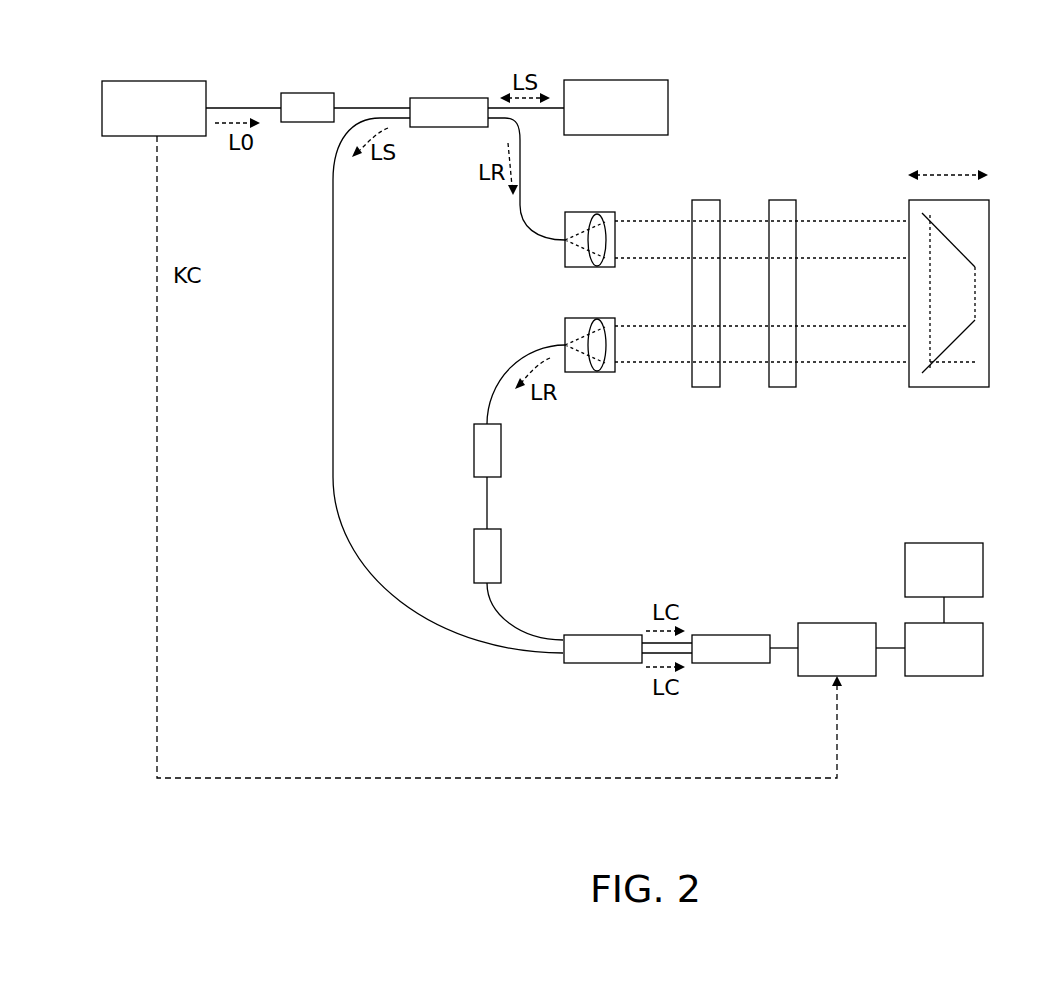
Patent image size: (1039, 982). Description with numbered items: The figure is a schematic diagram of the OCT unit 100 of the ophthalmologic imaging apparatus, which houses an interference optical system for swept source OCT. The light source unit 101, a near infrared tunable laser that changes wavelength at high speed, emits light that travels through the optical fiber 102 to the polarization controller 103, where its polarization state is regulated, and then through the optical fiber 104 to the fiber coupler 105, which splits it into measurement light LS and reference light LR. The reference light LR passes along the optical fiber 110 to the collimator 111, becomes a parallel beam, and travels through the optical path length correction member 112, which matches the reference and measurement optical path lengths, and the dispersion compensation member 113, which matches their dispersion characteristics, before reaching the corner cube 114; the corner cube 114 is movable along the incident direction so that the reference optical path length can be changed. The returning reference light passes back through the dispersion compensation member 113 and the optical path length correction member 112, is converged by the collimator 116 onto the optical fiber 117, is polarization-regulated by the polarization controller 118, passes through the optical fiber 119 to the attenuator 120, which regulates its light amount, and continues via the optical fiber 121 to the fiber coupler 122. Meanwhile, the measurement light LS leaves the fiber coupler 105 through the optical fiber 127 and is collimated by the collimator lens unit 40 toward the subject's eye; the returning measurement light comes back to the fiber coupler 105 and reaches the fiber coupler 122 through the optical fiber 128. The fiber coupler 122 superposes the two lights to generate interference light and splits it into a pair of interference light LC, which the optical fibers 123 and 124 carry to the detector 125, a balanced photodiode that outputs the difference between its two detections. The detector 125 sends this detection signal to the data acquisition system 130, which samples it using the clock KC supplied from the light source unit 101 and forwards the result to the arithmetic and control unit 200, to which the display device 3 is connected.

The OCT unit 100 is at (942, 95).
The light source unit 101 is at (158, 80).
The optical fiber 102 is at (233, 106).
The polarization controller 103 is at (315, 93).
The optical fiber 104 is at (372, 106).
The fiber coupler 105 is at (433, 128).
The optical fiber 127 is at (553, 100).
The collimator lens unit 40 is at (612, 80).
The optical fiber 110 is at (525, 155).
The collimator 111 is at (608, 214).
The optical path length correction member 112 is at (712, 200).
The dispersion compensation member 113 is at (785, 200).
The corner cube 114 is at (985, 200).
The collimator 116 is at (605, 373).
The optical fiber 117 is at (504, 368).
The polarization controller 118 is at (502, 448).
The optical fiber 119 is at (490, 500).
The attenuator 120 is at (502, 553).
The optical fiber 121 is at (520, 630).
The fiber coupler 122 is at (598, 635).
The optical fiber 123 is at (690, 640).
The optical fiber 124 is at (645, 660).
The detector 125 is at (728, 635).
The optical fiber 128 is at (336, 290).
The data acquisition system 130 is at (833, 623).
The arithmetic and control unit 200 is at (930, 676).
The display device 3 is at (942, 543).